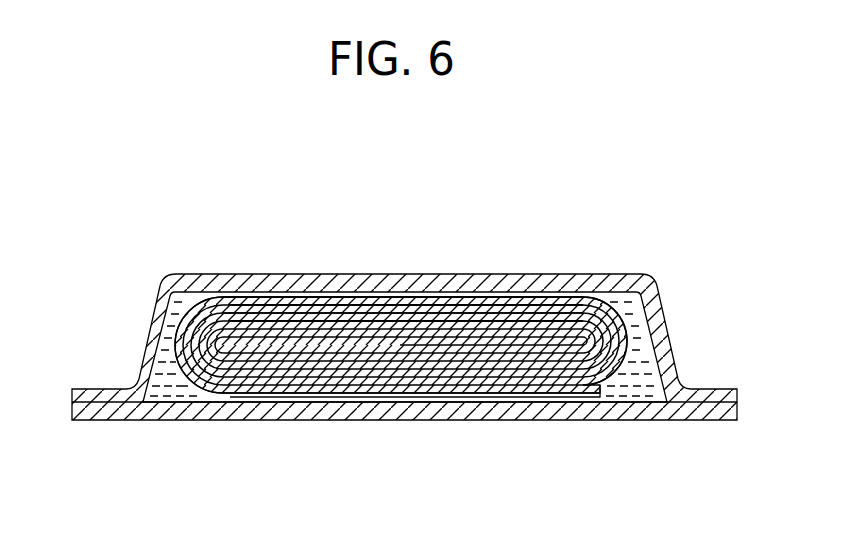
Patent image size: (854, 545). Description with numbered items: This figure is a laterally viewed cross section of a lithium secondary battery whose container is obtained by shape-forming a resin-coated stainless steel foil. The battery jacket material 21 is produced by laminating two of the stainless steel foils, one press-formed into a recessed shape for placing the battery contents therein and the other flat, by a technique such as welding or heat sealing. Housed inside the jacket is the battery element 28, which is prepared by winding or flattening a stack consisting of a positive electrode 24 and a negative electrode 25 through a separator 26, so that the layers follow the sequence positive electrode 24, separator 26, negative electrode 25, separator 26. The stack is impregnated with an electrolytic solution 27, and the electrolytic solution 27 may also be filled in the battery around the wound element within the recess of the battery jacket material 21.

The battery jacket material 21 is at (218, 273).
The positive electrode 24 is at (460, 193).
The negative electrode 25 is at (497, 307).
The separator 26 is at (530, 307).
The electrolytic solution 27 is at (172, 390).
The battery element 28 is at (417, 268).